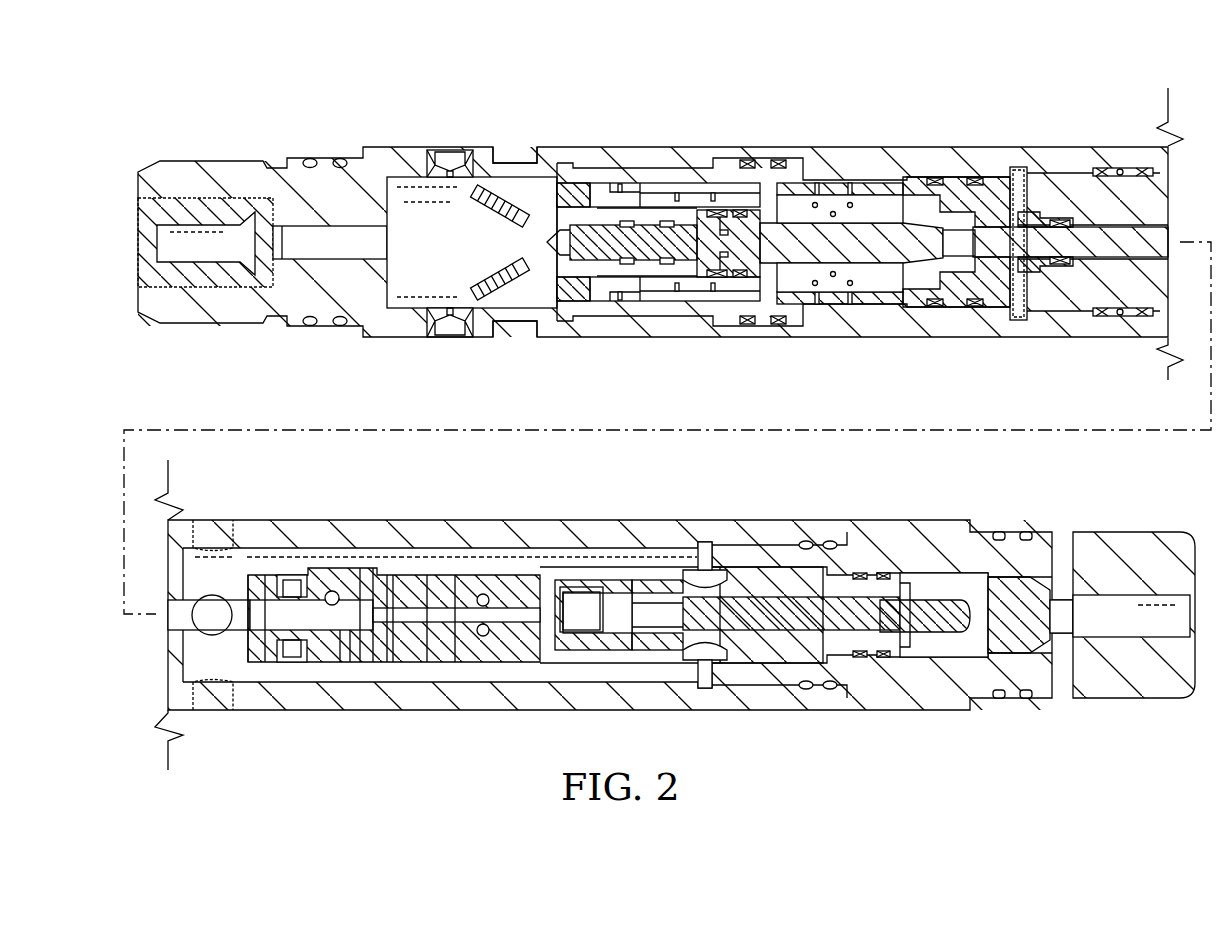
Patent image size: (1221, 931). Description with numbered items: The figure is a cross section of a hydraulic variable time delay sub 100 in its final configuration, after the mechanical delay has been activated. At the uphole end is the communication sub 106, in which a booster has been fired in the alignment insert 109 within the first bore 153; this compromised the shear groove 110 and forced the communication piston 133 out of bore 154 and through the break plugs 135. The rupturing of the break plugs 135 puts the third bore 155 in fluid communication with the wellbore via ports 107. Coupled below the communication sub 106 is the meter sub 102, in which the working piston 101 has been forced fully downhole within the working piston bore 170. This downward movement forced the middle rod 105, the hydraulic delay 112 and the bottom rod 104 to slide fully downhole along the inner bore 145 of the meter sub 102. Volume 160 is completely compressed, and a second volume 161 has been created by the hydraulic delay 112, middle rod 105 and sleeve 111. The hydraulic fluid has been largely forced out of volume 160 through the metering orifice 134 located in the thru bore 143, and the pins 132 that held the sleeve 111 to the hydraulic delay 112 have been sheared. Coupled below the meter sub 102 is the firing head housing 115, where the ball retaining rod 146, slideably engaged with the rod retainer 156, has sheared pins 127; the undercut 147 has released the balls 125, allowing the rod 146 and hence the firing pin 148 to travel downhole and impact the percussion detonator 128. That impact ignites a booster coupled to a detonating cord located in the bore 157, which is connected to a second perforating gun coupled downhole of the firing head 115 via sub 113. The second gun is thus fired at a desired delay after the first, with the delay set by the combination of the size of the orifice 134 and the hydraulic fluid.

The hydraulic variable time delay sub 100 is at (567, 78).
The working piston 101 is at (735, 292).
The meter sub 102 is at (1079, 160).
The bottom rod 104 is at (1122, 258).
The middle rod 105 is at (758, 178).
The communication sub 106 is at (513, 163).
The ports 107 is at (455, 150).
The alignment insert 109 is at (182, 195).
The shear groove 110 is at (522, 305).
The sleeve 111 is at (568, 302).
The hydraulic delay 112 is at (955, 310).
The sub 113 is at (1137, 548).
The firing head housing 115 is at (601, 530).
The balls 125 is at (487, 598).
The pins 127 is at (355, 662).
The percussion detonator 128 is at (1010, 585).
The pins 132 is at (850, 207).
The communication piston 133 is at (665, 262).
The metering orifice 134 is at (1002, 195).
The break plugs 135 is at (482, 193).
The thru bore 143 is at (920, 195).
The inner bore 145 is at (888, 200).
The ball retaining rod 146 is at (265, 662).
The undercut 147 is at (437, 598).
The firing pin 148 is at (935, 633).
The first bore 153 is at (208, 290).
The bore 154 is at (348, 230).
The third bore 155 is at (375, 305).
The rod retainer 156 is at (330, 575).
The bore 157 is at (1140, 622).
The volume 160 is at (1023, 290).
The second volume 161 is at (873, 287).
The working piston bore 170 is at (622, 262).